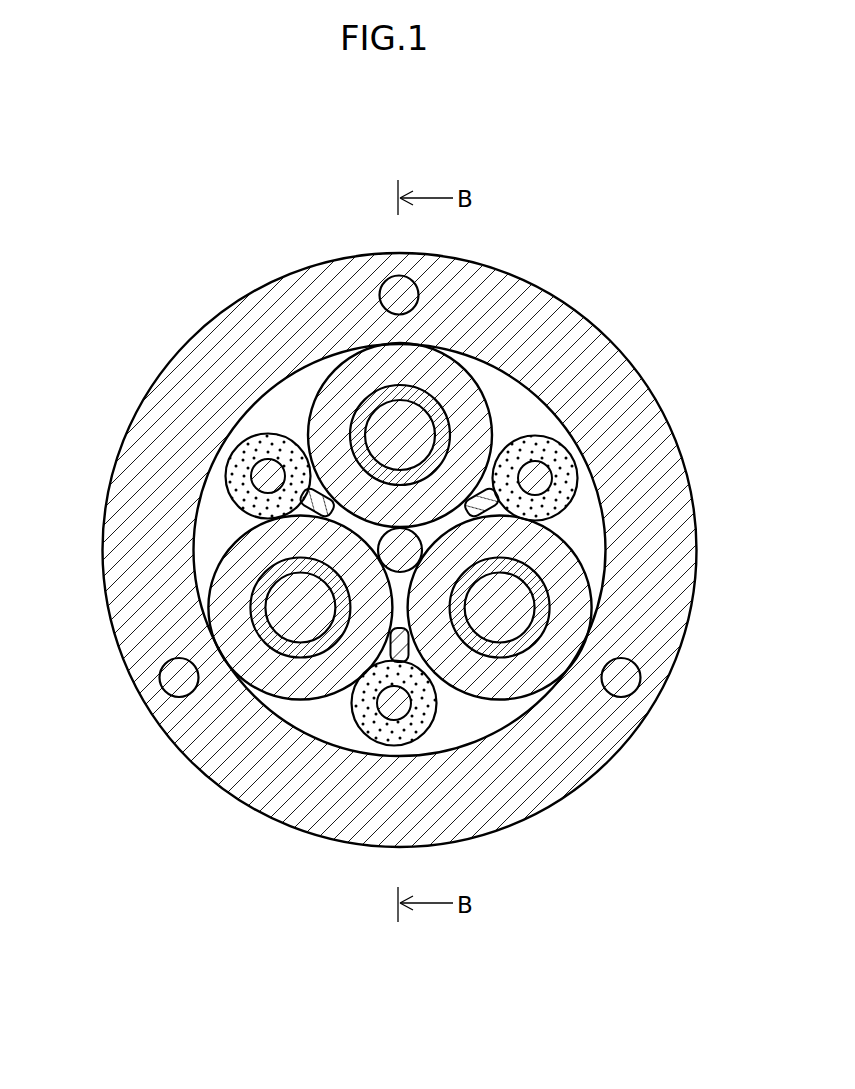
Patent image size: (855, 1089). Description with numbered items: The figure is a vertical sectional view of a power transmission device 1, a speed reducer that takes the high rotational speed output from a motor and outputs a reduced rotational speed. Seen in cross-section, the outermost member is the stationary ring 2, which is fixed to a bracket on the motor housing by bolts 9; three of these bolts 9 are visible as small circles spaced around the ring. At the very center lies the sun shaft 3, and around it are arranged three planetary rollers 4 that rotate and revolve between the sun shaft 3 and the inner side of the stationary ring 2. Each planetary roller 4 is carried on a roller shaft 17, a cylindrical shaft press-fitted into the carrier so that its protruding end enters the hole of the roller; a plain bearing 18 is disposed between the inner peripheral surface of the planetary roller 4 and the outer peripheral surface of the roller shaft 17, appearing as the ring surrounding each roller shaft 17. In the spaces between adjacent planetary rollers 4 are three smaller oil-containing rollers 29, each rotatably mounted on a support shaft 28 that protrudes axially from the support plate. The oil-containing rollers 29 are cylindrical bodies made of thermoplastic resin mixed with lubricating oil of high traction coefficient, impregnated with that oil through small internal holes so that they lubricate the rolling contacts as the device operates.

The power transmission device 1 is at (592, 293).
The stationary ring 2 is at (522, 301).
The sun shaft 3 is at (390, 550).
The planetary roller 4 is at (348, 377).
The bolt 9 is at (391, 291).
The roller shaft 17 is at (498, 628).
The plain bearing 18 is at (543, 618).
The support shaft 28 is at (262, 472).
The oil-containing roller 29 is at (248, 440).